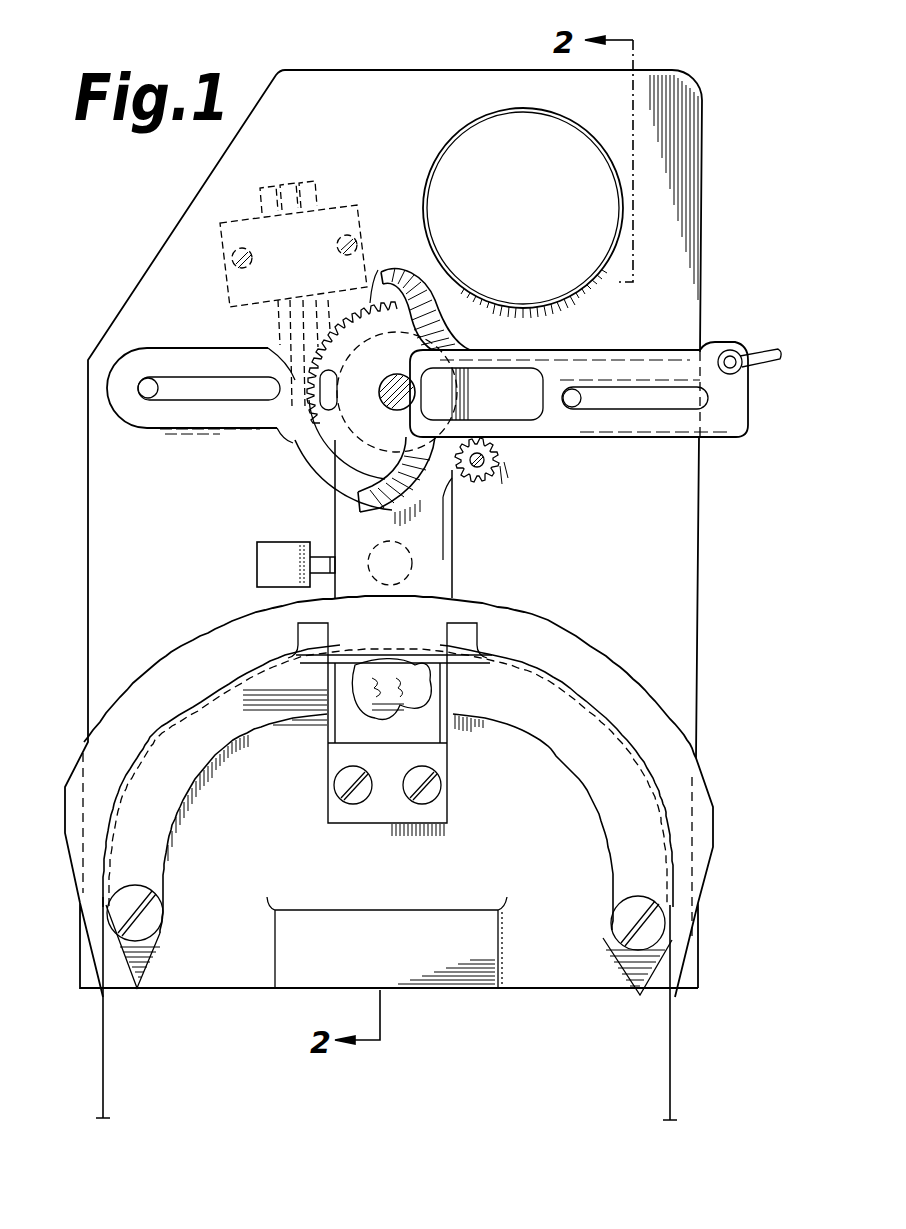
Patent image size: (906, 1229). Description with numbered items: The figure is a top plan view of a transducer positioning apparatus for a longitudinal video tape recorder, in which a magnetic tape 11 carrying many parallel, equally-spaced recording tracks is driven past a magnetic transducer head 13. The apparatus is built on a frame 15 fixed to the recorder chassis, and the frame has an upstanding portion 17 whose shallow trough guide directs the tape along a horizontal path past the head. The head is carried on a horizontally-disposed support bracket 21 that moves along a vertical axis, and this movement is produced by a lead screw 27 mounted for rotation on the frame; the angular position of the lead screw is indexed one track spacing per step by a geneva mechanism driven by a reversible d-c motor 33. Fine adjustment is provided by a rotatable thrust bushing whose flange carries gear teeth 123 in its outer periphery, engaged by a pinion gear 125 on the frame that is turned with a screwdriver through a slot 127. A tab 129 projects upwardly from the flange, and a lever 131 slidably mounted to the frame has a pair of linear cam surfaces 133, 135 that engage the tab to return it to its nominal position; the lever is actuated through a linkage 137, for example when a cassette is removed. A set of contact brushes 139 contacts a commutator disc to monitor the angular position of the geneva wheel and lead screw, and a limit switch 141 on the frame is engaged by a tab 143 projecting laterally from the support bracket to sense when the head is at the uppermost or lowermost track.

The magnetic tape 11 is at (425, 640).
The magnetic transducer head 13 is at (342, 727).
The frame 15 is at (389, 533).
The upstanding portion 17 is at (605, 802).
The support bracket 21 is at (448, 568).
The lead screw 27 is at (397, 410).
The reversible d-c motor 33 is at (523, 213).
The gear teeth 123 is at (371, 300).
The pinion gear 125 is at (506, 452).
The slot 127 is at (480, 478).
The tab 129 is at (298, 441).
The lever 131 is at (140, 432).
The linear cam surface 133 is at (402, 411).
The linear cam surface 135 is at (410, 343).
The linkage 137 is at (755, 352).
The contact brushes 139 is at (266, 321).
The limit switch 141 is at (257, 565).
The tab 143 is at (332, 556).